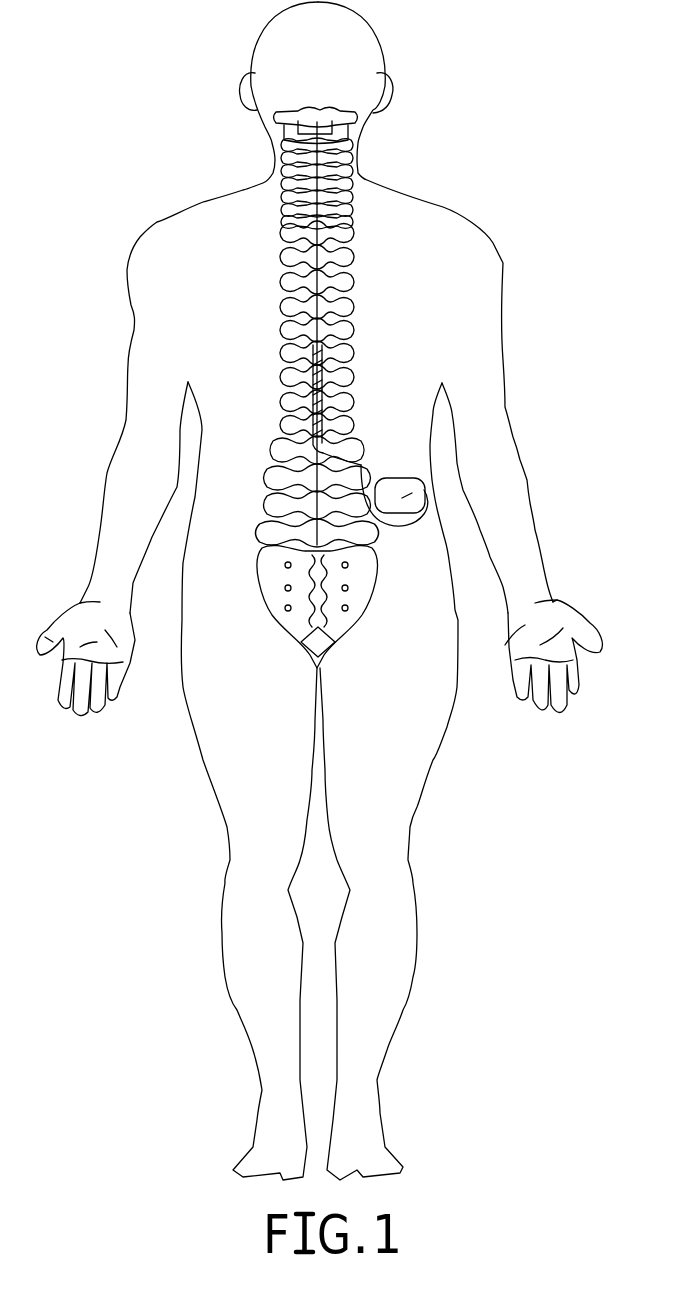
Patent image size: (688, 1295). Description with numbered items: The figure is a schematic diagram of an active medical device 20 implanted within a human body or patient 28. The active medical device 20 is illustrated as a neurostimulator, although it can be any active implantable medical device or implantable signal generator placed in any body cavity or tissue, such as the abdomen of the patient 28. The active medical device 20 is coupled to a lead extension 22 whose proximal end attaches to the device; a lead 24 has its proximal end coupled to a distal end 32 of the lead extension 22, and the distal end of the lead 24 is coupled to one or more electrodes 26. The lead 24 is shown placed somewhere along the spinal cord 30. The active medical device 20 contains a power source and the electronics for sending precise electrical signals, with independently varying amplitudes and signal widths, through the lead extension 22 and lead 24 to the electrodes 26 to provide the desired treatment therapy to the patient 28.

The active medical device 20 is at (427, 492).
The lead extension 22 is at (412, 524).
The lead 24 is at (332, 440).
The electrodes 26 is at (350, 368).
The patient 28 is at (447, 208).
The spinal cord 30 is at (350, 330).
The distal end 32 is at (361, 465).